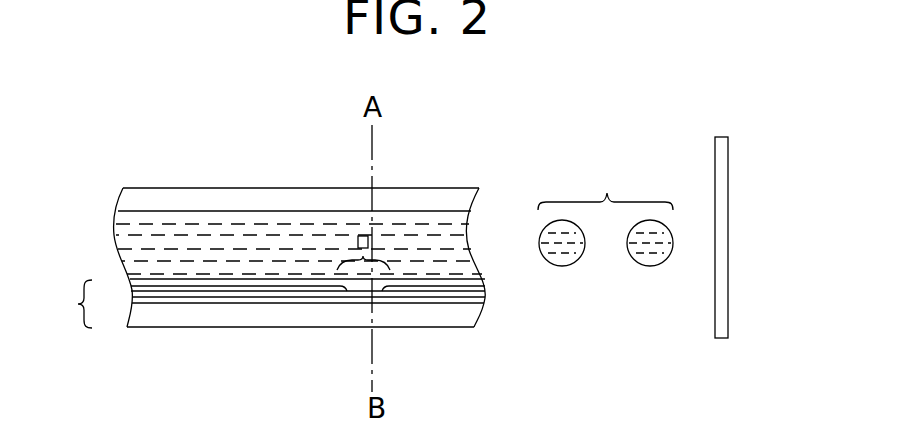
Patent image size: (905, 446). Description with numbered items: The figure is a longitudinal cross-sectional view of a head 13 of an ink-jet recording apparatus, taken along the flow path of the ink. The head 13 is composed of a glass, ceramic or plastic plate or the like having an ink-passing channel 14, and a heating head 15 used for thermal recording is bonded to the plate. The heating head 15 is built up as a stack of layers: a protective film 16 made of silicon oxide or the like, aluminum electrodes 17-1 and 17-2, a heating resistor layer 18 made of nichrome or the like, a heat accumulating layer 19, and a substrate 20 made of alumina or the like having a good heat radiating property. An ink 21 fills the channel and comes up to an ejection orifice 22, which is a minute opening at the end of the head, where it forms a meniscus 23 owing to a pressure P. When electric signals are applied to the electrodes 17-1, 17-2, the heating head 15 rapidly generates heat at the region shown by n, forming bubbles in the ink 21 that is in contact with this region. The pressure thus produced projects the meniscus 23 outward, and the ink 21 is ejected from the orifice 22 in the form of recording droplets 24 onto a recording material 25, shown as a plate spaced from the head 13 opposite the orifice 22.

The head 13 is at (215, 188).
The ink-passing channel 14 is at (285, 211).
The heating head 15 is at (62, 304).
The protective film 16 is at (162, 283).
The aluminum electrode 17-1 is at (215, 292).
The aluminum electrode 17-2 is at (463, 302).
The heating resistor layer 18 is at (302, 293).
The heat accumulating layer 19 is at (339, 300).
The substrate 20 is at (413, 327).
The ink 21 is at (145, 220).
The ejection orifice 22 is at (492, 282).
The meniscus 23 is at (473, 247).
The recording droplets 24 is at (605, 209).
The recording material 25 is at (728, 183).